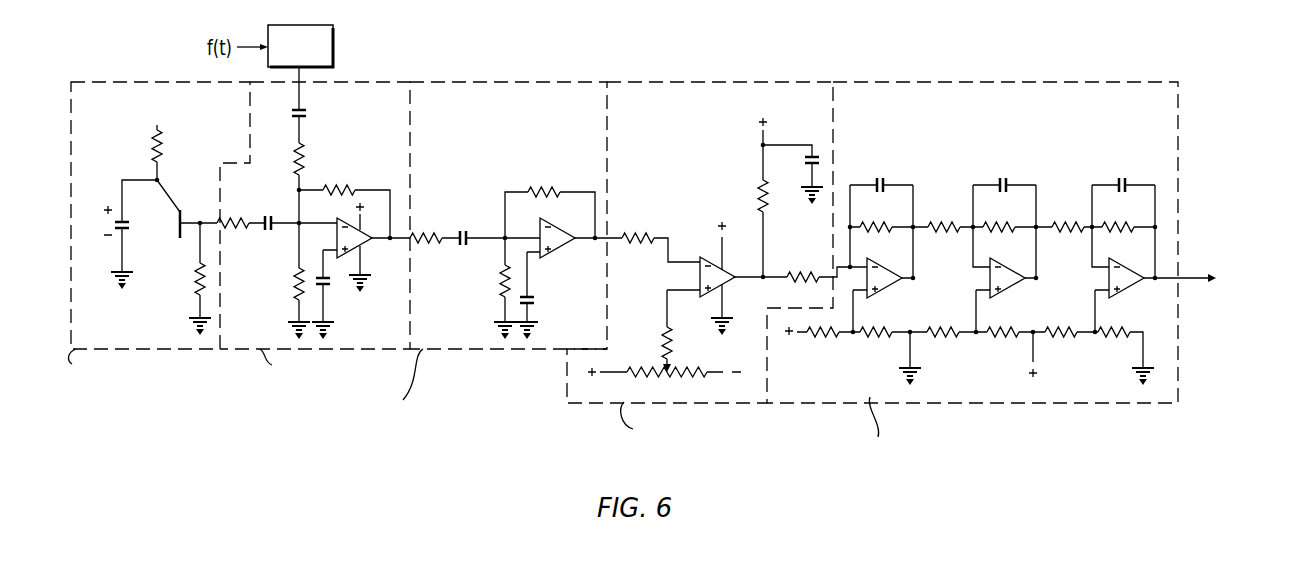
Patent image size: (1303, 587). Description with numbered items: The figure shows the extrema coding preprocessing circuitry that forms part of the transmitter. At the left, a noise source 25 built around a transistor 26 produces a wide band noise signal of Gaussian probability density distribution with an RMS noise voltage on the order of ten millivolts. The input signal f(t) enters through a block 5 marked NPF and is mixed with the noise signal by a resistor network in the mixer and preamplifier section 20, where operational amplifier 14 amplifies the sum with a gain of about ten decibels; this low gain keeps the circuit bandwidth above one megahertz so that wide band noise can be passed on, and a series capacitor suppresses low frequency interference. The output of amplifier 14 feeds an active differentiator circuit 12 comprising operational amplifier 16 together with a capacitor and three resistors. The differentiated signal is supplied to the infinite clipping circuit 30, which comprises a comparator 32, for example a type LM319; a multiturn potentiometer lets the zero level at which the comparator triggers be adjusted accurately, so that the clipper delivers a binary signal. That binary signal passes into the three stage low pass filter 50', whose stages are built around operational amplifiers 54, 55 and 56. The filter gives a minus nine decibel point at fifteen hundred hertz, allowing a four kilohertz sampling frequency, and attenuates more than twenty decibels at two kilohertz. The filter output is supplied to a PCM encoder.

The NPF filter block 5 is at (335, 35).
The noise source 25 is at (163, 82).
The transistor 26 is at (180, 210).
The mixer / preamplifier 20 is at (350, 82).
The operational amplifier 14 is at (338, 218).
The active differentiator circuit 12 is at (488, 82).
The operational amplifier 16 is at (550, 223).
The infinite clipping circuit 30 is at (712, 83).
The comparator 32 is at (711, 257).
The low pass filter 50' is at (1035, 251).
The operational amplifier 54 is at (890, 271).
The operational amplifier 55 is at (1013, 271).
The operational amplifier 56 is at (1132, 271).